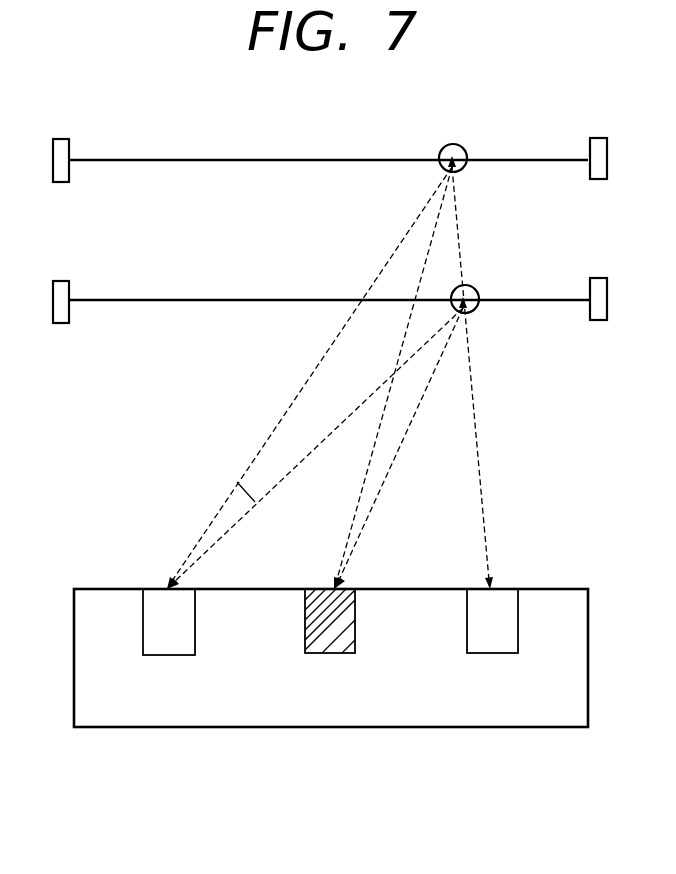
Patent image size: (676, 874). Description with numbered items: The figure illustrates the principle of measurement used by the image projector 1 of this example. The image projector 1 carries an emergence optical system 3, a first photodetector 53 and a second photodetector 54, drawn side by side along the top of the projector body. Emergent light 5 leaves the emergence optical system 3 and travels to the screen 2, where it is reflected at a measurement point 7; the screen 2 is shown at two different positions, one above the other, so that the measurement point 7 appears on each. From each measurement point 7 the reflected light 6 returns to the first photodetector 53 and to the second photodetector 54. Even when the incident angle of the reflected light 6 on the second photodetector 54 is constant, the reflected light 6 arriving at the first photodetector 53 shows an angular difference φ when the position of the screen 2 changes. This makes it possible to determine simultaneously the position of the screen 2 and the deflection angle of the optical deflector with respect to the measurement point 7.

The image projector 1 is at (355, 718).
The screen 2 is at (168, 160).
The emergence optical system 3 is at (352, 626).
The emergent light 5 is at (406, 318).
The reflected light 6 is at (295, 395).
The measurement point 7 is at (460, 146).
The first photodetector 53 is at (157, 629).
The second photodetector 54 is at (497, 626).